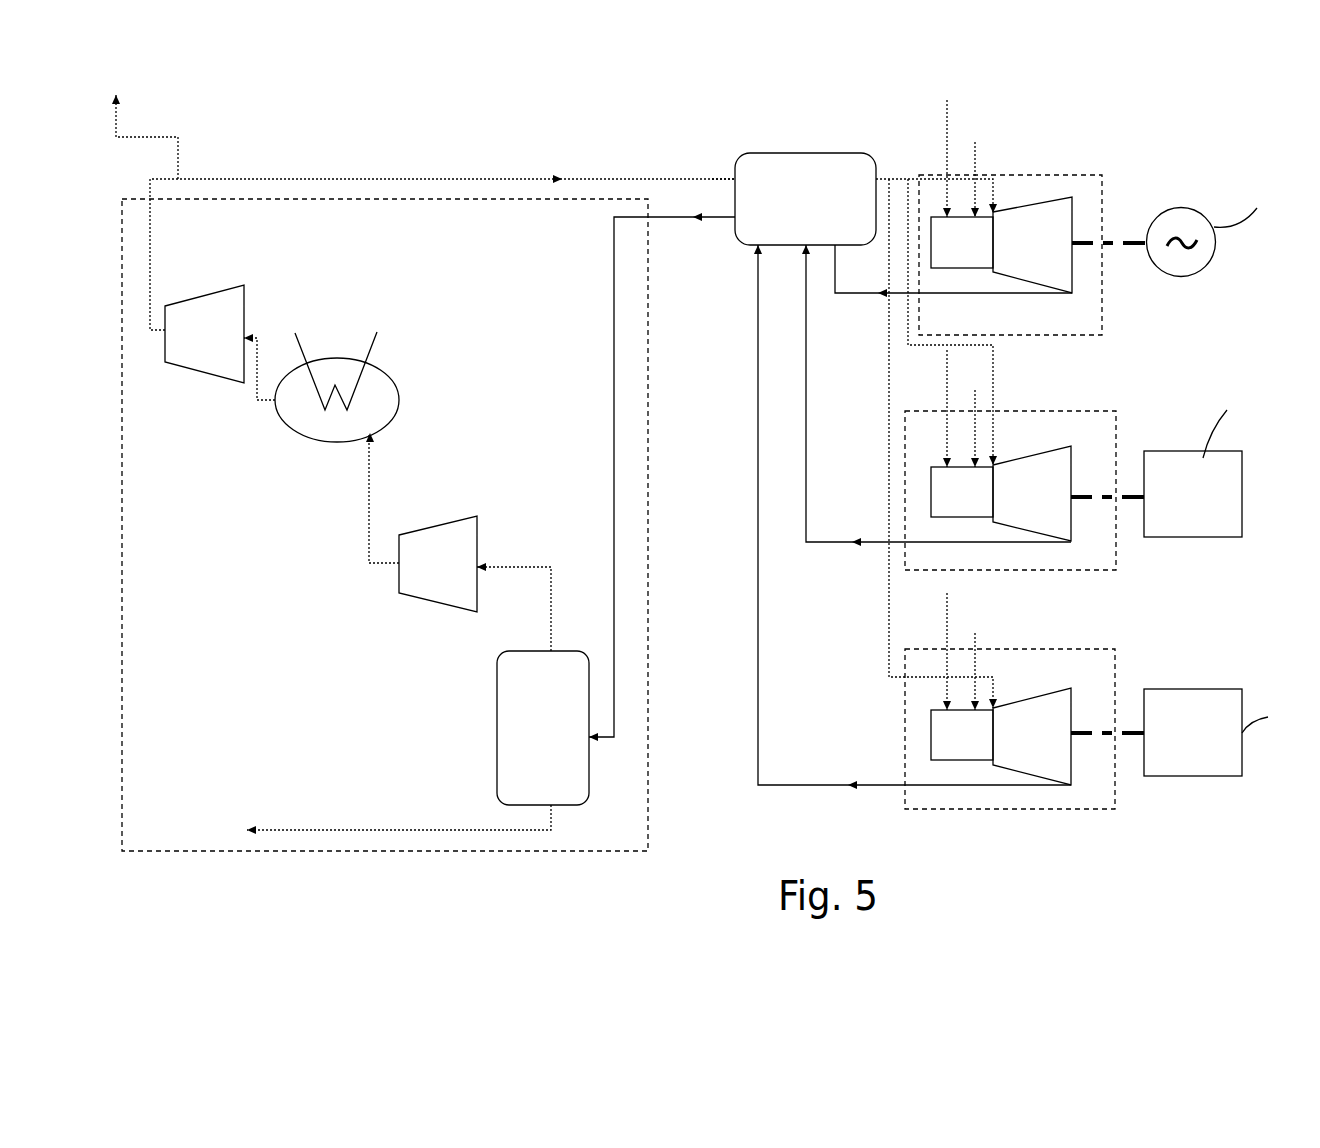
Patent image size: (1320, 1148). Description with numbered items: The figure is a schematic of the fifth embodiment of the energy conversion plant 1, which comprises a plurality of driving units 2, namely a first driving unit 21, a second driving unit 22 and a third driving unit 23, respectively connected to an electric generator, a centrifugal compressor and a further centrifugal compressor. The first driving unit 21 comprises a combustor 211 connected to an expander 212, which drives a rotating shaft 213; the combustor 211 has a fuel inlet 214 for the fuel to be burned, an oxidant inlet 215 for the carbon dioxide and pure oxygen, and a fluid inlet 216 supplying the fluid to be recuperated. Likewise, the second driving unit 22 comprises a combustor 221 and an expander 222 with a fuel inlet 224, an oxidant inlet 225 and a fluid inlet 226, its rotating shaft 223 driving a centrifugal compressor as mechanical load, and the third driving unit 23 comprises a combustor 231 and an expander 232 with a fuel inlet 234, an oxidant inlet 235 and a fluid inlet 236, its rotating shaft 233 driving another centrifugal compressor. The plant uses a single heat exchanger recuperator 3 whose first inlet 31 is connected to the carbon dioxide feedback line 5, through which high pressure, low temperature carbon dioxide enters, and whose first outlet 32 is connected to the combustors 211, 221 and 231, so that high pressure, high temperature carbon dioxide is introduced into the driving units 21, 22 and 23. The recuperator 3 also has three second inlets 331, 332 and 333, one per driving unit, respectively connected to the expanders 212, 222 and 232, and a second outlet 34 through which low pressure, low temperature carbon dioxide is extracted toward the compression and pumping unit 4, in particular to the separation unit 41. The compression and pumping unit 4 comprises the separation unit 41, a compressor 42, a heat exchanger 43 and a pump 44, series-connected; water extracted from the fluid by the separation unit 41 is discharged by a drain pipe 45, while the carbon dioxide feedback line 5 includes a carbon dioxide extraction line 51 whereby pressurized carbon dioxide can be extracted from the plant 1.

The energy conversion plant 1 is at (1240, 104).
The driving unit 2 is at (1085, 125).
The heat exchanger recuperator 3 is at (772, 168).
The compression and pumping unit 4 is at (648, 833).
The carbon dioxide feedback line 5 is at (310, 179).
The first driving unit 21 is at (1103, 192).
The second driving unit 22 is at (1115, 435).
The third driving unit 23 is at (1115, 660).
The first inlet 31 is at (735, 179).
The first outlet 32 is at (877, 170).
The second outlet 34 is at (734, 220).
The separation unit 41 is at (497, 715).
The compressor 42 is at (462, 515).
The heat exchanger 43 is at (398, 392).
The pump 44 is at (244, 301).
The drain pipe 45 is at (322, 829).
The carbon dioxide extraction line 51 is at (118, 122).
The combustor 211 is at (977, 248).
The expander 212 is at (1072, 278).
The rotating shaft 213 is at (1130, 247).
The fuel inlet 214 is at (947, 120).
The oxidant inlet 215 is at (975, 160).
The fluid inlet 216 is at (994, 197).
The combustor 221 is at (977, 517).
The expander 222 is at (1060, 483).
The rotating shaft 223 is at (1130, 500).
The fuel inlet 224 is at (947, 363).
The oxidant inlet 225 is at (975, 403).
The fluid inlet 226 is at (993, 445).
The combustor 231 is at (970, 743).
The expander 232 is at (1052, 750).
The rotating shaft 233 is at (1125, 737).
The fuel inlet 234 is at (947, 613).
The oxidant inlet 235 is at (975, 643).
The fluid inlet 236 is at (993, 687).
The second inlet 331 is at (833, 247).
The second inlet 332 is at (804, 250).
The second inlet 333 is at (756, 250).